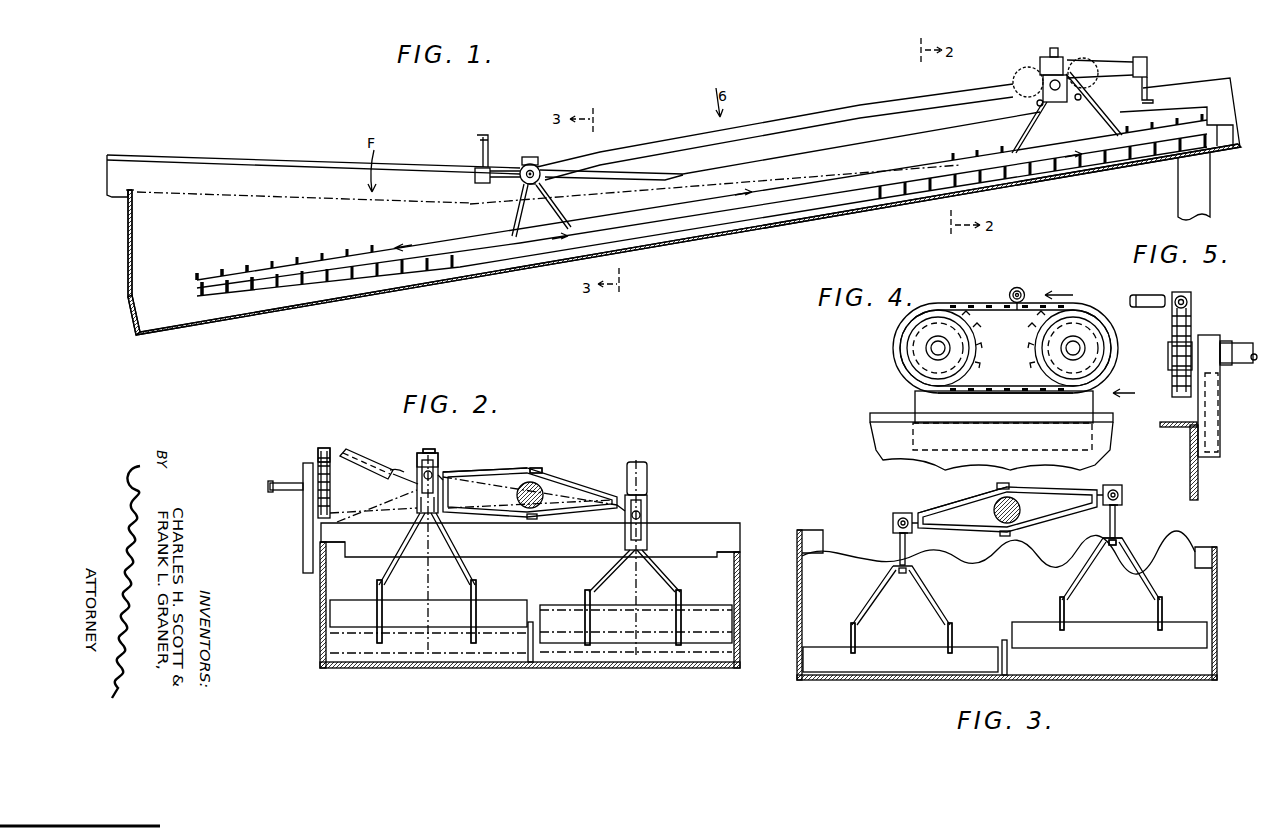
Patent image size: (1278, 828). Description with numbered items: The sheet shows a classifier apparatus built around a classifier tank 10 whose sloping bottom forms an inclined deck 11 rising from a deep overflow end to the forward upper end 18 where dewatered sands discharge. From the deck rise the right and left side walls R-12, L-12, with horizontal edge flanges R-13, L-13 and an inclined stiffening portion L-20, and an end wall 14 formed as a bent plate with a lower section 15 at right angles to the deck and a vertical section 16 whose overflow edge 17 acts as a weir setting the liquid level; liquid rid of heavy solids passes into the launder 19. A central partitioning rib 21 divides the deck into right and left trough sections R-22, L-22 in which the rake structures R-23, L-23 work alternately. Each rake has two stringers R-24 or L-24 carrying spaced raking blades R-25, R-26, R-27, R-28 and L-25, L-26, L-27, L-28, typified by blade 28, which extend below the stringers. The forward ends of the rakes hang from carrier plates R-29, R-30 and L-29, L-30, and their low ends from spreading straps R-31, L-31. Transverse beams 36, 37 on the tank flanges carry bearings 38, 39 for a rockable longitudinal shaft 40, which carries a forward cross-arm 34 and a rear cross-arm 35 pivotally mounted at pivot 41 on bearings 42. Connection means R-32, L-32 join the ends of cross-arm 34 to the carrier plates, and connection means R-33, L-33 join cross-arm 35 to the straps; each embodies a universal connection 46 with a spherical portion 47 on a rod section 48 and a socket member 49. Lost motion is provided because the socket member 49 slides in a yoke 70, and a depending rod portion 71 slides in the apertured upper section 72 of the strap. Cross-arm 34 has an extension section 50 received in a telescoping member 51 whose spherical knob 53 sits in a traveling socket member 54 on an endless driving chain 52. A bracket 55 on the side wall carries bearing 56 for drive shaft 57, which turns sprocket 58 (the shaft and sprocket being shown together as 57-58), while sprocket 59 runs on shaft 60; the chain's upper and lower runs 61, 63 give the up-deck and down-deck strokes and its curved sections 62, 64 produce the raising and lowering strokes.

In FIG. 1, the classifier tank 10 is at (313, 185).
In FIG. 1, the inclined deck 11 is at (690, 237).
In FIG. 1, the end wall 14 is at (104, 262).
In FIG. 1, the lower section of end wall 15 is at (130, 313).
In FIG. 1, the vertically-extending section of end wall 16 is at (128, 215).
In FIG. 1, the overflow edge 17 is at (137, 189).
In FIG. 1, the forward upper end of inclined deck 18 is at (1241, 143).
In FIG. 1, the overflow receiving launder 19 is at (118, 192).
In FIG. 1, the partitioning rib 21 is at (1223, 123).
In FIG. 2, the partitioning rib 21 is at (531, 621).
In FIG. 3, the partitioning rib 21 is at (1004, 640).
In FIG. 2, the transverse raking blade 28 is at (529, 619).
In FIG. 3, the transverse raking blade 28 is at (1006, 633).
In FIG. 1, the forward cross-arm 34 is at (1043, 62).
In FIG. 2, the forward cross-arm 34 is at (508, 468).
In FIG. 1, the rear cross-arm 35 is at (540, 164).
In FIG. 3, the rear cross-arm 35 is at (962, 498).
In FIG. 1, the transverse beam 36 is at (478, 148).
In FIG. 1, the transverse beam 37 is at (1153, 86).
In FIG. 2, the transverse beam 37 is at (530, 540).
In FIG. 1, the bearing 38 is at (476, 180).
In FIG. 1, the bearing 39 is at (1146, 57).
In FIG. 1, the rockable shaft 40 is at (749, 127).
In FIG. 2, the rockable shaft 40 is at (518, 496).
In FIG. 3, the rockable shaft 40 is at (994, 512).
In FIG. 1, the pivot 41 is at (528, 156).
In FIG. 2, the pivot 41 is at (541, 469).
In FIG. 3, the pivot 41 is at (1000, 484).
In FIG. 2, the bearing 42 is at (545, 495).
In FIG. 3, the bearing 42 is at (1022, 506).
In FIG. 2, the universal connection 46 is at (486, 452).
In FIG. 3, the universal connection 46 is at (905, 512).
In FIG. 2, the spherical portion 47 is at (434, 470).
In FIG. 3, the spherical portion 47 is at (898, 518).
In FIG. 2, the rod section 48 is at (446, 478).
In FIG. 3, the rod section 48 is at (916, 530).
In FIG. 2, the socket member 49 is at (421, 453).
In FIG. 3, the socket member 49 is at (893, 524).
In FIG. 2, the extension section 50 is at (401, 467).
In FIG. 2, the telescoping member 51 is at (346, 452).
In FIG. 5, the telescoping member 51 is at (1147, 294).
In FIG. 2, the endless driving chain 52 is at (330, 484).
In FIG. 4, the endless driving chain 52 is at (1016, 310).
In FIG. 2, the spherical knob 53 is at (322, 448).
In FIG. 5, the spherical knob 53 is at (1184, 294).
In FIG. 2, the traveling socket member 54 is at (318, 452).
In FIG. 4, the traveling socket member 54 is at (1026, 291).
In FIG. 5, the traveling socket member 54 is at (1188, 300).
In FIG. 2, the carrying bracket 55 is at (303, 520).
In FIG. 4, the carrying bracket 55 is at (915, 400).
In FIG. 5, the carrying bracket 55 is at (1220, 400).
In FIG. 5, the supporting bearing 56 is at (1192, 342).
In FIG. 4, the drive shaft 57 is at (1076, 360).
In FIG. 5, the drive shaft 57 is at (1243, 343).
In FIG. 2, the drive shaft and sprocket 57-58 is at (285, 481).
In FIG. 4, the spur gear or sprocket 58 is at (1050, 357).
In FIG. 4, the spur gear or sprocket 59 is at (960, 352).
In FIG. 4, the shaft 60 is at (940, 356).
In FIG. 4, the upper run of chain 61 is at (978, 303).
In FIG. 4, the curved section of chain 62 is at (900, 341).
In FIG. 4, the lower run of chain 63 is at (1020, 395).
In FIG. 4, the curved section of chain 64 is at (1115, 349).
In FIG. 2, the yoke 70 is at (437, 452).
In FIG. 3, the depending rod portion 71 is at (1110, 521).
In FIG. 3, the apertured upper section 72 is at (1108, 539).
In FIG. 2, the left side wall L-12 is at (320, 600).
In FIG. 3, the left side wall L-12 is at (1212, 590).
In FIG. 2, the right side wall R-12 is at (741, 580).
In FIG. 3, the right side wall R-12 is at (797, 605).
In FIG. 2, the left edge flange L-13 is at (338, 541).
In FIG. 3, the left edge flange L-13 is at (1206, 552).
In FIG. 2, the right edge flange R-13 is at (737, 548).
In FIG. 3, the right edge flange R-13 is at (829, 545).
In FIG. 1, the left inclined flange portion L-20 is at (772, 160).
In FIG. 4, the left inclined flange portion L-20 is at (1018, 419).
In FIG. 5, the left inclined flange portion L-20 is at (1185, 421).
In FIG. 2, the left rake-receiving trough section L-22 is at (402, 656).
In FIG. 3, the left rake-receiving trough section L-22 is at (1085, 677).
In FIG. 2, the right rake-receiving trough section R-22 is at (603, 655).
In FIG. 3, the right rake-receiving trough section R-22 is at (862, 677).
In FIG. 1, the left rake structure L-23 is at (513, 206).
In FIG. 2, the left rake structure L-23 is at (408, 608).
In FIG. 3, the left rake structure L-23 is at (1112, 590).
In FIG. 1, the right rake structure R-23 is at (548, 206).
In FIG. 2, the right rake structure R-23 is at (655, 612).
In FIG. 3, the right rake structure R-23 is at (903, 609).
In FIG. 2, the left stringers L-24 is at (473, 618).
In FIG. 3, the left stringers L-24 is at (1155, 604).
In FIG. 2, the right stringers R-24 is at (679, 640).
In FIG. 3, the right stringers R-24 is at (946, 630).
In FIG. 1, the left raking blade L-25 is at (197, 274).
In FIG. 1, the right raking blade R-25 is at (203, 300).
In FIG. 1, the left raking blade L-26 is at (222, 268).
In FIG. 1, the right raking blade R-26 is at (228, 296).
In FIG. 1, the left raking blade L-27 is at (250, 265).
In FIG. 1, the right raking blade R-27 is at (256, 292).
In FIG. 1, the left raking blade L-28 is at (330, 262).
In FIG. 1, the right raking blade R-28 is at (352, 286).
In FIG. 2, the left carrier plate L-29 is at (396, 560).
In FIG. 2, the right carrier plate R-29 is at (670, 566).
In FIG. 2, the left carrier plate L-30 is at (465, 565).
In FIG. 2, the right carrier plate R-30 is at (601, 568).
In FIG. 3, the left supporting strap L-31 is at (1076, 575).
In FIG. 3, the right supporting strap R-31 is at (935, 596).
In FIG. 2, the left forward connection means L-32 is at (417, 486).
In FIG. 2, the right forward connection means R-32 is at (648, 521).
In FIG. 3, the left rear connection means L-33 is at (1116, 527).
In FIG. 1, the right rear connection means R-33 is at (548, 184).
In FIG. 3, the right rear connection means R-33 is at (907, 558).